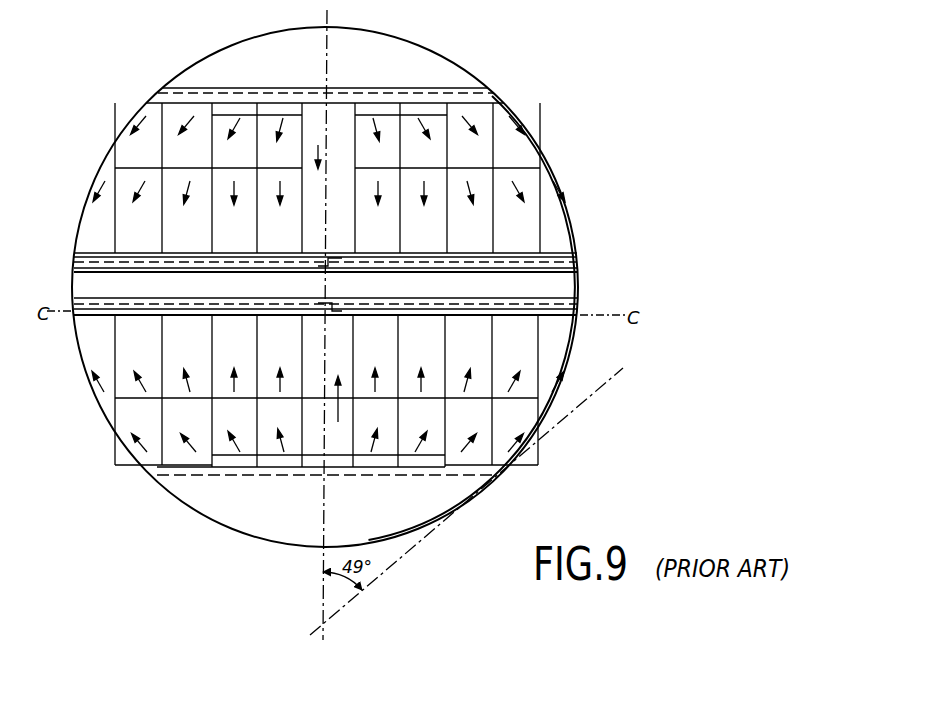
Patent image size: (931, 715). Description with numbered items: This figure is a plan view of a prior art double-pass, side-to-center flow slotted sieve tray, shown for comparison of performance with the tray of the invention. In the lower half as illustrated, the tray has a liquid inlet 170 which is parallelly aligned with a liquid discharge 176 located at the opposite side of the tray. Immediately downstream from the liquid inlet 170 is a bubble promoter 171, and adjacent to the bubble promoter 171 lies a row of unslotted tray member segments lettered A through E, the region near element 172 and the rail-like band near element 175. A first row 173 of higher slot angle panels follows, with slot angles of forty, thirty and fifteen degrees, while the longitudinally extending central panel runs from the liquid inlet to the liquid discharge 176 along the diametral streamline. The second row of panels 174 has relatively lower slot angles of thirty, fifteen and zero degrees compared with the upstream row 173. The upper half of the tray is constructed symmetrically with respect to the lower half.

The liquid inlet 170 is at (283, 525).
The bubble promoter 171 is at (160, 469).
The lettered strip 172 is at (215, 463).
The first row of higher slot angle panels 173 is at (126, 452).
The second row of panels 174 is at (94, 399).
The upper rail band 175 is at (90, 311).
The liquid discharge 176 is at (571, 292).